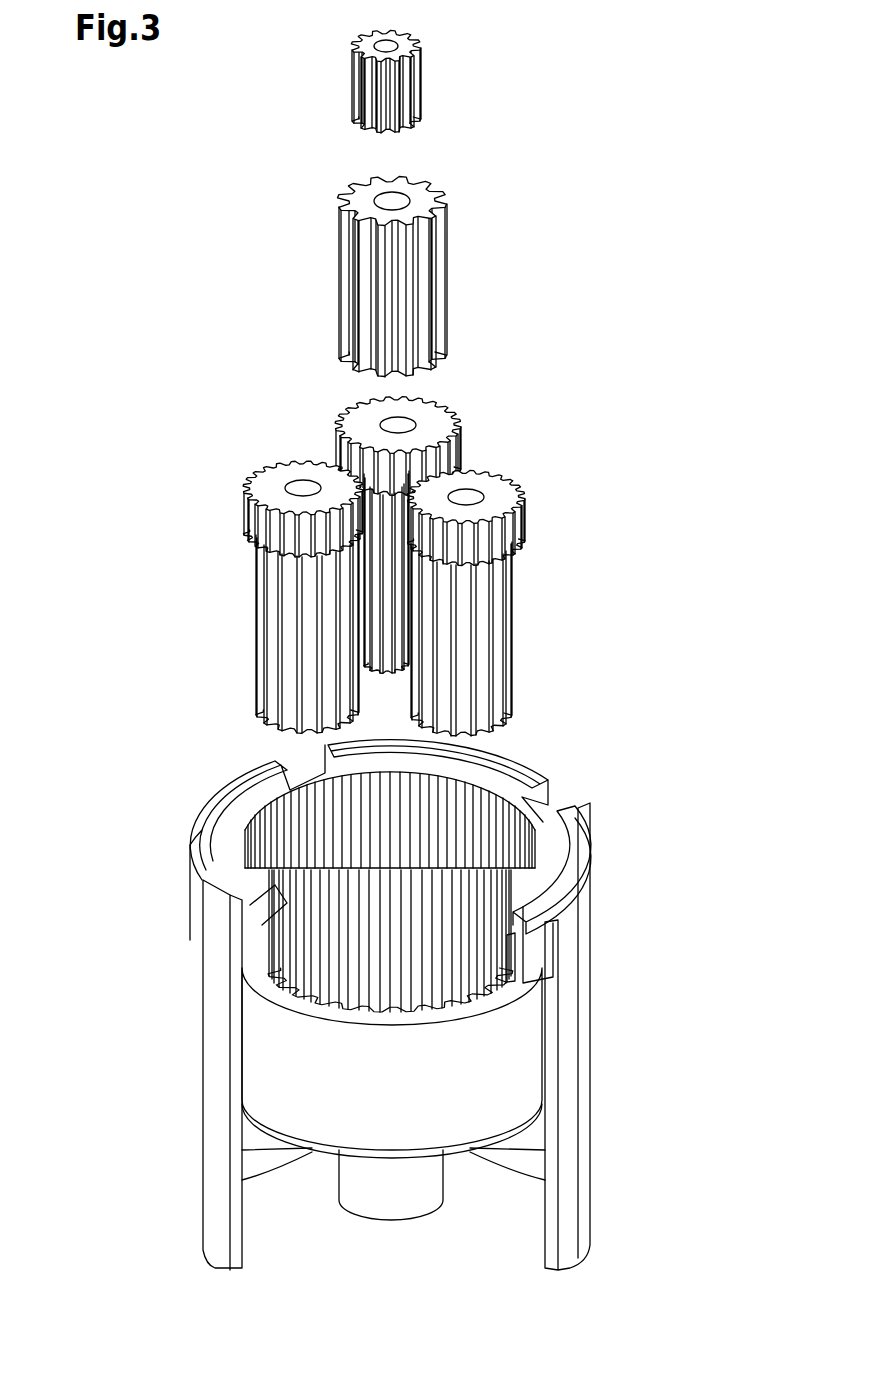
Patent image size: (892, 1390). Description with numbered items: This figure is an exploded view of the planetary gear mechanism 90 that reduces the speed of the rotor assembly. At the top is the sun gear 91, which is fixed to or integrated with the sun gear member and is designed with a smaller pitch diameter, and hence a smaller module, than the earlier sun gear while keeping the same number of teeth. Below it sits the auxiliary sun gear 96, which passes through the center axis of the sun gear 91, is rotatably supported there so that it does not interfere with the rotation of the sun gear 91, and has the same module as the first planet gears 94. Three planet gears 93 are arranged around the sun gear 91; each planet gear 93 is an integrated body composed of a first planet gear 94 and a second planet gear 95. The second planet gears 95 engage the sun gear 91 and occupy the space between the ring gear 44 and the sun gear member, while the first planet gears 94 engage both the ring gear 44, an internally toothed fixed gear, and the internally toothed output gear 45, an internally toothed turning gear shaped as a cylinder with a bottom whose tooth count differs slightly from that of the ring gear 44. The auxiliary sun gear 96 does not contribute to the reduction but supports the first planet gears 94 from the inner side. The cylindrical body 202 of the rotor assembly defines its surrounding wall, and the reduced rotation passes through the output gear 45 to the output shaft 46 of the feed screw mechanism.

The planetary gear unit 90 is at (682, 83).
The sun gear 91 is at (420, 46).
The auxiliary sun gear 96 is at (447, 216).
The planet gear 93 is at (454, 397).
The second planet gear 95 is at (455, 425).
The first planet gear 94 is at (262, 622).
The ring gear 44 is at (540, 850).
The cylindrical body 202 is at (575, 1158).
The internally toothed output gear 45 is at (500, 1068).
The output shaft 46 is at (425, 1192).